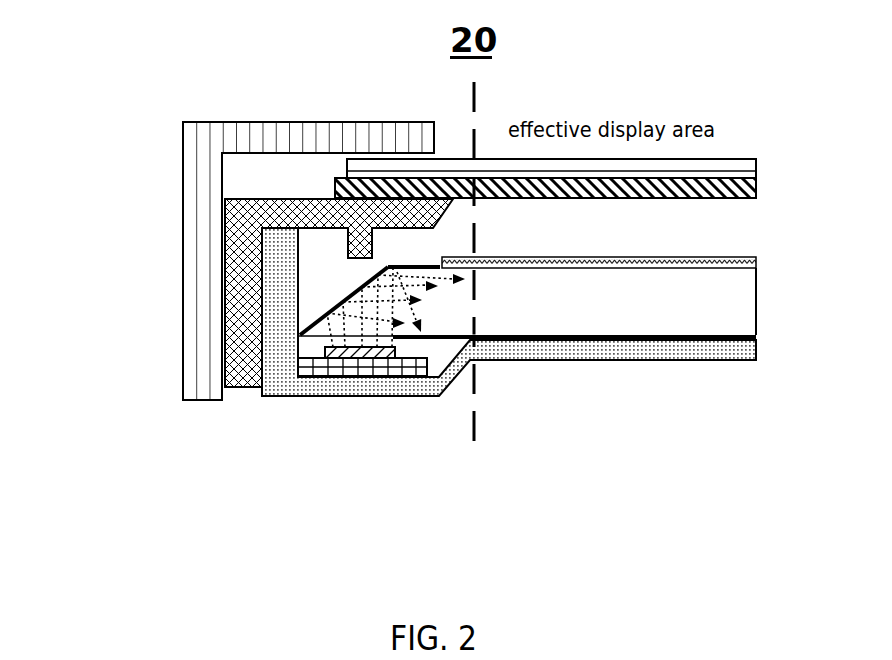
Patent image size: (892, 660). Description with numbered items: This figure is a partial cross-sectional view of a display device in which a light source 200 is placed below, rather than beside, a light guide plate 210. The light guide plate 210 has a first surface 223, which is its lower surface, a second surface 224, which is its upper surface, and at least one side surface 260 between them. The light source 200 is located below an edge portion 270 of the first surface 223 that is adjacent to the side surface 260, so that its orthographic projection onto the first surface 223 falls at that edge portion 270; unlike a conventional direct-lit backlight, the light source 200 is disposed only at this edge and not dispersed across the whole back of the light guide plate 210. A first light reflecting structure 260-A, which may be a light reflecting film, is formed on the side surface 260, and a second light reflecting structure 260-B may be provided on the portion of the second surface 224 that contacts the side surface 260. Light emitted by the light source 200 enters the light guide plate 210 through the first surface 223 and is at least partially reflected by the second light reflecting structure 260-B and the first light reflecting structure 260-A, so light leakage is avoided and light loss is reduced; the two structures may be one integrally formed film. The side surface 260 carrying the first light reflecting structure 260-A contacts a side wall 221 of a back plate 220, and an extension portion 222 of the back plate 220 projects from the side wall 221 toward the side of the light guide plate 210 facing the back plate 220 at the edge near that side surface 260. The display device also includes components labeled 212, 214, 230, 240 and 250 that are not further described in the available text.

The light source 200 is at (360, 367).
The light guide plate 210 is at (723, 317).
The reflective sheet 212 is at (757, 342).
The optical film 214 is at (624, 244).
The back plate 220 is at (467, 396).
The side wall 221 is at (272, 337).
The extension portion 222 is at (338, 385).
The first surface 223 is at (637, 340).
The second surface 224 is at (658, 266).
The middle frame 230 is at (240, 297).
The front frame 240 is at (207, 243).
The display panel 250 is at (738, 165).
The side surface 260 is at (289, 229).
The first light reflecting structure 260-A is at (327, 314).
The second light reflecting structure 260-B is at (430, 266).
The edge portion 270 is at (323, 347).